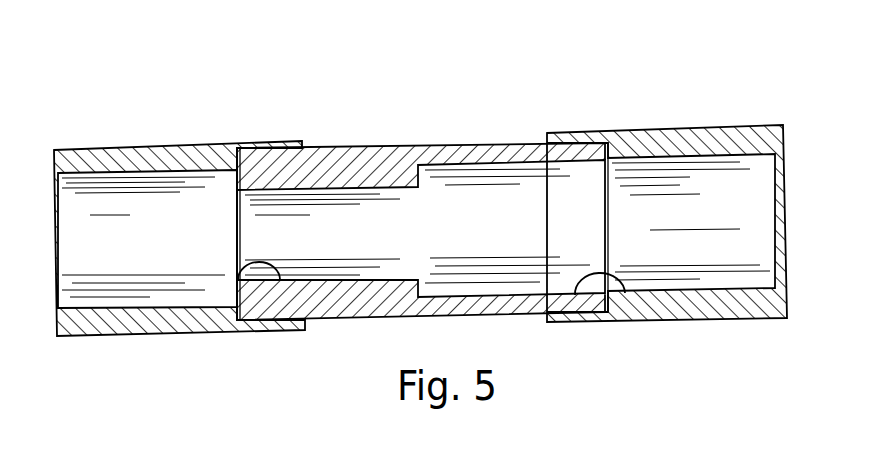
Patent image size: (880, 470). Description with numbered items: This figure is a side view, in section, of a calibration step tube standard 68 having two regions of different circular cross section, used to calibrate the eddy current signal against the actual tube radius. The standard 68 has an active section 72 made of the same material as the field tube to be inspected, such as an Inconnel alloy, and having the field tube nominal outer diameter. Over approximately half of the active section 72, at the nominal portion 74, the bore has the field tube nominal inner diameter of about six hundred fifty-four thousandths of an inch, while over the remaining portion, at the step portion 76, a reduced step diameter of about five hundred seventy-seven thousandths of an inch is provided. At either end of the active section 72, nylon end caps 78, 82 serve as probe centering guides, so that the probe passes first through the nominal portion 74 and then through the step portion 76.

The calibration step tube standard 68 is at (513, 130).
The active section 72 is at (383, 148).
The nominal portion 74 is at (625, 294).
The step portion 76 is at (238, 280).
The nylon end cap 78 is at (203, 148).
The nylon end cap 82 is at (650, 133).